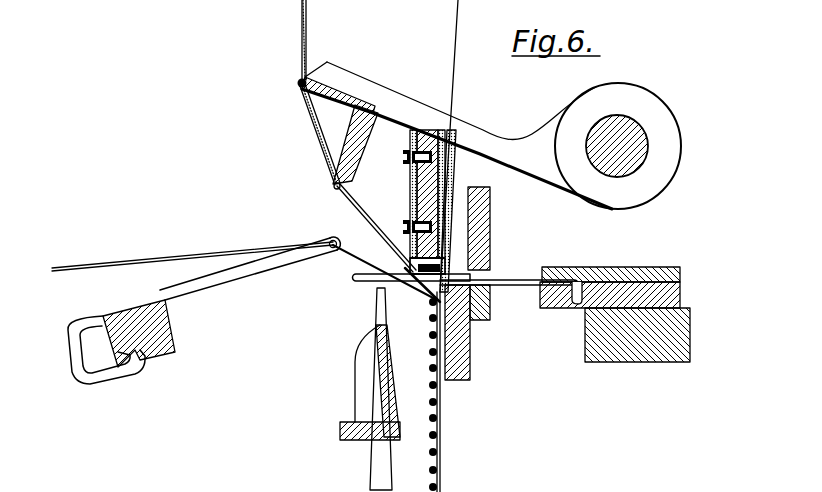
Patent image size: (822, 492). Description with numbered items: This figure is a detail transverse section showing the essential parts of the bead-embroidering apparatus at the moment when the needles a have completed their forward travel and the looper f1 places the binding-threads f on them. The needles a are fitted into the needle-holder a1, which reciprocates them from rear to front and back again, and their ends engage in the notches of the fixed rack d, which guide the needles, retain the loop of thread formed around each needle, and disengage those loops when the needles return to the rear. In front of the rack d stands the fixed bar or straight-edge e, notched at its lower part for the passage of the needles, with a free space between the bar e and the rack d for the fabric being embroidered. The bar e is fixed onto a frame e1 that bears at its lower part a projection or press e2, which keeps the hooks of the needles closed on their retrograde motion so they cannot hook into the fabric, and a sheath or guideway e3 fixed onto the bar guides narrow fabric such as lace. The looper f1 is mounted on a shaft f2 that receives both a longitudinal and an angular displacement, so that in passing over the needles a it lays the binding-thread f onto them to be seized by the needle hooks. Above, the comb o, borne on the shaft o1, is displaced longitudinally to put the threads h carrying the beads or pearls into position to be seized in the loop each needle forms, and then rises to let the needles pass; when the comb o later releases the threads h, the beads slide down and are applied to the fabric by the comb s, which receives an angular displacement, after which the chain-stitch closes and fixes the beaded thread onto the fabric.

The comb o is at (345, 181).
The shaft o1 is at (645, 144).
The threads carrying the beads or pearls h is at (315, 138).
The frame e1 is at (425, 187).
The sheath or guideway e3 is at (452, 167).
The fixed bar or straight-edge e is at (445, 258).
The projection or press e2 is at (403, 268).
The needles a is at (508, 282).
The needle-holder a1 is at (615, 300).
The fixed rack d is at (468, 342).
The comb s is at (382, 322).
The binding-thread f is at (342, 255).
The looper f1 is at (243, 270).
The shaft f2 is at (160, 330).